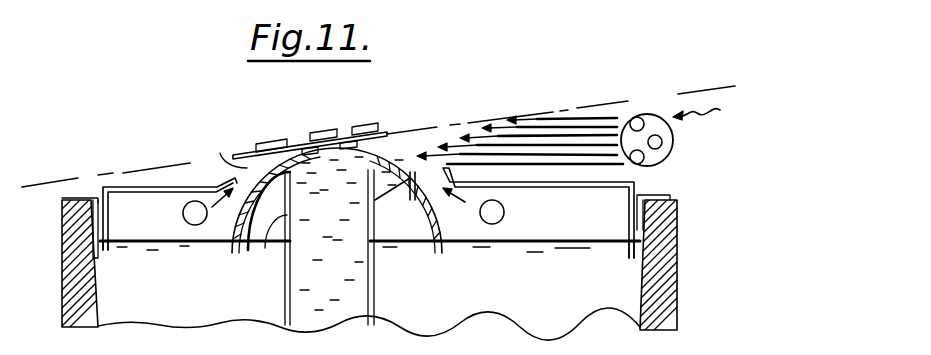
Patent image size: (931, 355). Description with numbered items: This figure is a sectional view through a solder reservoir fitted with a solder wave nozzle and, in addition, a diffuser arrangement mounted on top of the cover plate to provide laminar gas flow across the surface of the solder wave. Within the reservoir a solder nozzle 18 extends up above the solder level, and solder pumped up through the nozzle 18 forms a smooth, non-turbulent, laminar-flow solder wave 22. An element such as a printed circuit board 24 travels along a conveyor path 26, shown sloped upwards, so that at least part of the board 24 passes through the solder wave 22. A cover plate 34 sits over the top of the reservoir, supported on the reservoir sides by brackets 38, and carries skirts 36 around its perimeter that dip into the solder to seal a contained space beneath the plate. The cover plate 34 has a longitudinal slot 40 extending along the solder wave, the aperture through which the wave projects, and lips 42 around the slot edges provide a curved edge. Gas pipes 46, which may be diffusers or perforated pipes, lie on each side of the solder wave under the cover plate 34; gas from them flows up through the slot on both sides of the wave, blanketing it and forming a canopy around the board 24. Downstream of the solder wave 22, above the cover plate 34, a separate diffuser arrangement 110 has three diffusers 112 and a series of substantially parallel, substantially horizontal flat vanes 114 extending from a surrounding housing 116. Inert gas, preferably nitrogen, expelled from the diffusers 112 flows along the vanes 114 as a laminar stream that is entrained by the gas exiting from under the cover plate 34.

The solder nozzle 18 is at (270, 253).
The solder wave 22 is at (393, 167).
The printed circuit board 24 is at (302, 143).
The conveyor path 26 is at (663, 98).
The cover plate 34 is at (576, 188).
The skirts 36 is at (107, 252).
The brackets 38 is at (90, 180).
The longitudinal slot 40 is at (222, 155).
The lips 42 is at (220, 182).
The gas pipes 46 is at (182, 215).
The diffuser arrangement 110 is at (716, 110).
The diffusers 112 is at (638, 117).
The flat vanes 114 is at (549, 148).
The housing 116 is at (672, 148).